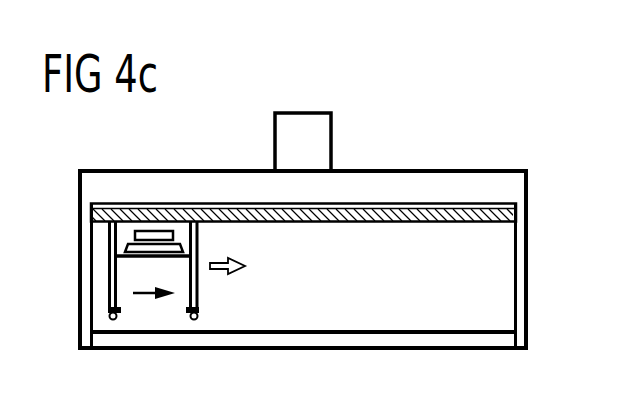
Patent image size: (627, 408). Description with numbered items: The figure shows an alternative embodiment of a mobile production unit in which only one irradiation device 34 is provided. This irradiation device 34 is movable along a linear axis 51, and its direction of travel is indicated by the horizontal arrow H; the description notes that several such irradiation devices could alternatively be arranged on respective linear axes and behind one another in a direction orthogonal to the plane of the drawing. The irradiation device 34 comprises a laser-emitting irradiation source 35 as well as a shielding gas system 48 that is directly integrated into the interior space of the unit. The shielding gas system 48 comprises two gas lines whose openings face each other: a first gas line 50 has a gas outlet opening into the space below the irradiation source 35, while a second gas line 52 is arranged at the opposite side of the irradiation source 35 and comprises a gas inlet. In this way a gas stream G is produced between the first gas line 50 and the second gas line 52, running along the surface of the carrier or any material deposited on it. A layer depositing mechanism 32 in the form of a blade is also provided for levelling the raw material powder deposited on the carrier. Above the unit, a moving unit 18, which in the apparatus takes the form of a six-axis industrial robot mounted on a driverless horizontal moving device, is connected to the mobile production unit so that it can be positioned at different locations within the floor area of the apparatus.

The moving unit 18 is at (300, 127).
The layer depositing mechanism 32 is at (430, 340).
The irradiation device 34 is at (183, 222).
The irradiation source 35 is at (140, 231).
The shielding gas system 48 is at (100, 275).
The first gas line 50 is at (120, 318).
The linear axis 51 is at (350, 223).
The second gas line 52 is at (188, 318).
The gas stream G is at (142, 293).
The horizontal arrow H is at (222, 273).